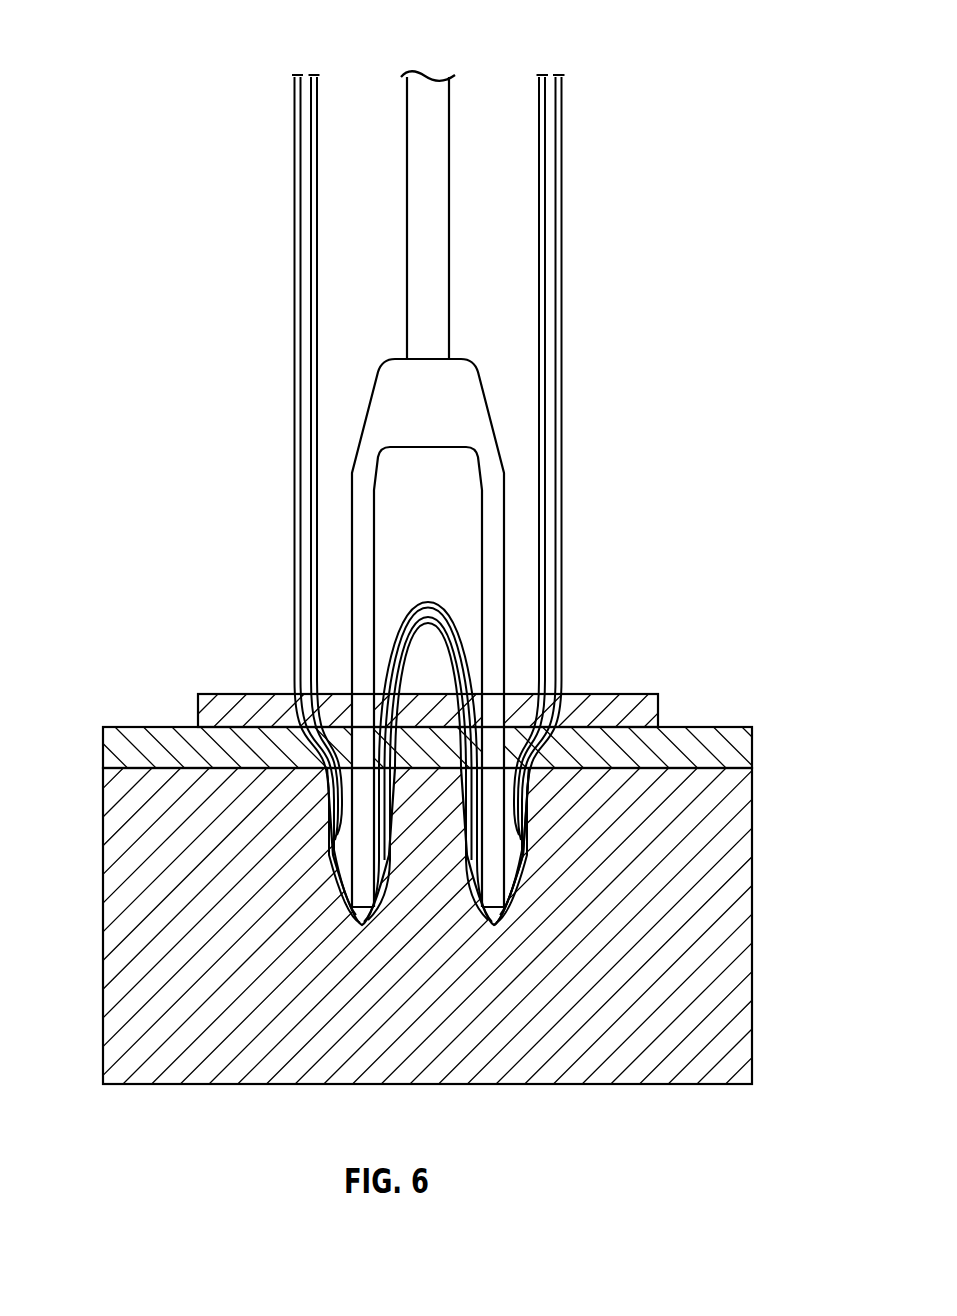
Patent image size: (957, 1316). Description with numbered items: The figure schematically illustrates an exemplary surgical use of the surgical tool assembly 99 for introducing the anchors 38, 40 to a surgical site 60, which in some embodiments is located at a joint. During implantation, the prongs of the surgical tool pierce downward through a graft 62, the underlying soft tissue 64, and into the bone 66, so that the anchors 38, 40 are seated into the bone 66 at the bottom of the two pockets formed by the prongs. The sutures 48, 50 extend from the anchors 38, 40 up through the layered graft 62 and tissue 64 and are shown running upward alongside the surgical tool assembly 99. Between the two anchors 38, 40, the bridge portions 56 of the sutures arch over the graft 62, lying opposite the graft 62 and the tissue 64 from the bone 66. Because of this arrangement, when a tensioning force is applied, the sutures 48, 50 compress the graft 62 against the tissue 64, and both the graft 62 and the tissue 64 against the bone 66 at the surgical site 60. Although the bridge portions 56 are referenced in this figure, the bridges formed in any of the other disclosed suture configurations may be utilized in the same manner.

The surgical tool assembly 99 is at (279, 31).
The suture 50 is at (540, 127).
The suture 48 is at (563, 233).
The bridge portions 56 is at (431, 590).
The anchor 38 is at (337, 809).
The anchor 40 is at (523, 797).
The surgical site 60 is at (820, 914).
The graft 62 is at (658, 708).
The soft tissue 64 is at (753, 745).
The bone 66 is at (753, 982).